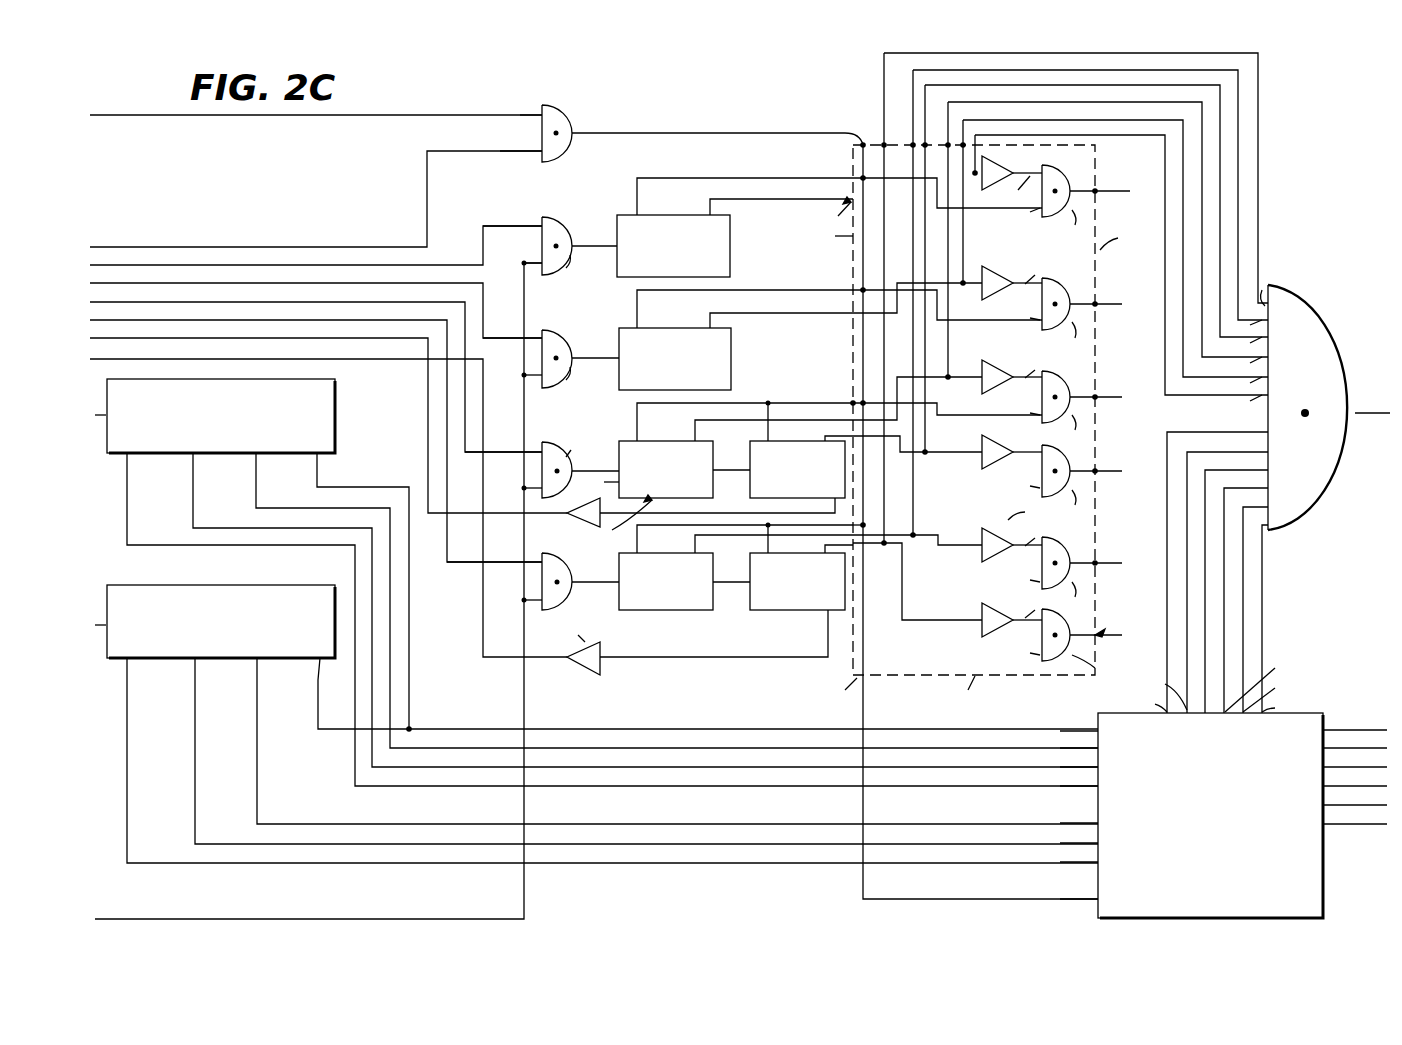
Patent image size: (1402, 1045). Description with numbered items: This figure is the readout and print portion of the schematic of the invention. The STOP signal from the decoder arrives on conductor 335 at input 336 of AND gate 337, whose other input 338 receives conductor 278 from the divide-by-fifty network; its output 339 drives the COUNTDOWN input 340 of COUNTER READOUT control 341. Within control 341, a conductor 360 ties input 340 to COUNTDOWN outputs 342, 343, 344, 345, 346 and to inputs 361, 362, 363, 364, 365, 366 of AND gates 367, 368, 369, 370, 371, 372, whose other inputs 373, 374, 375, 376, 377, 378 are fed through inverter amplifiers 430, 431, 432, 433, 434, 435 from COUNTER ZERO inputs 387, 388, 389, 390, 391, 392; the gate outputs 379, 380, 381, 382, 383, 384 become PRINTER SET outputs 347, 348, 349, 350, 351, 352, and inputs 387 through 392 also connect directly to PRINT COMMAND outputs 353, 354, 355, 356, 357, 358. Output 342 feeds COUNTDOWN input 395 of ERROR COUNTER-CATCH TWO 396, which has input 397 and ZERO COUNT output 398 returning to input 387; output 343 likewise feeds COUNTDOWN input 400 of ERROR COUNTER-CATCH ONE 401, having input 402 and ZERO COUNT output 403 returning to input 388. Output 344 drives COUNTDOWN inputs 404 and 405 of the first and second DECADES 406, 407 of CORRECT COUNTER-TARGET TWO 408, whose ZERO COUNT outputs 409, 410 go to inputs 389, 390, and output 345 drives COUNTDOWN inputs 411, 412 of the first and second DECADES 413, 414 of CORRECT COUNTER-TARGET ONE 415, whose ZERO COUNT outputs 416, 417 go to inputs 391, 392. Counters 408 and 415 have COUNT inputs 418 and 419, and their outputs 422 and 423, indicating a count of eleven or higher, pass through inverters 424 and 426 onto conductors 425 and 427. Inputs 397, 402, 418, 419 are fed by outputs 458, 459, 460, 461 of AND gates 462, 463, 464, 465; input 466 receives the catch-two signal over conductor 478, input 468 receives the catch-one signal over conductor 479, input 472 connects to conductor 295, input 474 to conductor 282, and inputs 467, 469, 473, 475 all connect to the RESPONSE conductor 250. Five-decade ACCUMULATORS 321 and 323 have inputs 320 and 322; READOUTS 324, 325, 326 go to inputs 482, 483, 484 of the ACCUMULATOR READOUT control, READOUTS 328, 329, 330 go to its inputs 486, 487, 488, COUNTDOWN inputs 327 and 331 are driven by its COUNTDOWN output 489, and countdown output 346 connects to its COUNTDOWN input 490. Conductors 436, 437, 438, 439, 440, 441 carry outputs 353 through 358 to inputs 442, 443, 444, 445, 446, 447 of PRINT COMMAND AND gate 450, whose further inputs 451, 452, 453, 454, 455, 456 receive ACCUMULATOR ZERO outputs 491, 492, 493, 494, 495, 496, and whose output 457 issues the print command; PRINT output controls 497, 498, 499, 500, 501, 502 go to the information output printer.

The RESPONSE conductor 250 is at (108, 917).
The conductor 278 is at (108, 117).
The conductor 282 is at (108, 318).
The conductor 295 is at (108, 300).
The input 320 is at (95, 415).
The ACCUMULATOR 321 is at (337, 405).
The input 322 is at (95, 625).
The ACCUMULATOR 323 is at (212, 586).
The readout 324 is at (130, 455).
The readout 325 is at (196, 455).
The readout 326 is at (259, 455).
The COUNTDOWN input 327 is at (320, 455).
The readout 328 is at (130, 660).
The readout 329 is at (198, 660).
The readout 330 is at (260, 660).
The COUNTDOWN input 331 is at (316, 682).
The conductor 335 is at (108, 245).
The input 336 is at (525, 143).
The AND gate 337 is at (563, 110).
The input 338 is at (520, 110).
The output 339 is at (570, 148).
The COUNTDOWN input 340 is at (853, 150).
The COUNTER READOUT control 341 is at (1053, 464).
The countdown output 342 is at (850, 180).
The countdown output 343 is at (852, 292).
The countdown output 344 is at (853, 400).
The countdown output 345 is at (865, 524).
The countdown output 346 is at (832, 691).
The printer set output 347 is at (1098, 190).
The printer set output 348 is at (1098, 303).
The printer set output 349 is at (1098, 396).
The printer set output 350 is at (1098, 470).
The printer set output 351 is at (1098, 562).
The printer set output 352 is at (1098, 634).
The PRINT COMMAND output 353 is at (965, 143).
The PRINT COMMAND output 354 is at (948, 143).
The PRINT COMMAND output 355 is at (925, 143).
The PRINT COMMAND output 356 is at (912, 143).
The PRINT COMMAND output 357 is at (884, 143).
The PRINT COMMAND output 358 is at (858, 142).
The conductor 360 is at (821, 236).
The input 361 is at (1017, 218).
The input 362 is at (1019, 307).
The input 363 is at (1017, 402).
The input 364 is at (1019, 476).
The input 365 is at (1019, 567).
The input 366 is at (1017, 643).
The AND gate 367 is at (1068, 160).
The AND gate 368 is at (1068, 272).
The AND gate 369 is at (1068, 365).
The AND gate 370 is at (1026, 512).
The AND gate 371 is at (1068, 533).
The AND gate 372 is at (1050, 662).
The input 373 is at (1021, 187).
The input 374 is at (1018, 269).
The input 375 is at (1021, 363).
The input 376 is at (1035, 445).
The input 377 is at (1021, 531).
The input 378 is at (1021, 603).
The output 379 is at (1068, 218).
The output 380 is at (1076, 333).
The output 381 is at (1076, 425).
The output 382 is at (1076, 500).
The output 383 is at (1076, 593).
The output 384 is at (1107, 661).
The COUNTER ZERO input 387 is at (818, 210).
The COUNTER ZERO input 388 is at (851, 309).
The COUNTER ZERO input 389 is at (853, 420).
The COUNTER ZERO input 390 is at (853, 436).
The COUNTER ZERO input 391 is at (860, 538).
The COUNTER ZERO input 392 is at (855, 545).
The COUNTDOWN input 395 is at (636, 182).
The ERROR COUNTER-CATCH TWO 396 is at (614, 280).
The input 397 is at (610, 250).
The ZERO COUNT output 398 is at (710, 210).
The COUNTDOWN input 400 is at (652, 305).
The ERROR COUNTER-CATCH ONE 401 is at (731, 357).
The input 402 is at (608, 345).
The ZERO COUNT output 403 is at (712, 325).
The COUNTDOWN input 404 is at (625, 415).
The COUNTDOWN input 405 is at (760, 437).
The first DECADE 406 is at (595, 481).
The second DECADE 407 is at (732, 477).
The CORRECT COUNTER-TARGET TWO 408 is at (627, 516).
The ZERO COUNT output 409 is at (685, 427).
The ZERO COUNT output 410 is at (820, 438).
The COUNTDOWN input 411 is at (630, 535).
The COUNTDOWN input 412 is at (764, 550).
The first DECADE 413 is at (640, 612).
The second DECADE 414 is at (765, 612).
The CORRECT COUNTER-TARGET ONE 415 is at (697, 626).
The ZERO COUNT output 416 is at (685, 545).
The ZERO COUNT output 417 is at (823, 550).
The COUNT input 418 is at (607, 468).
The COUNT input 419 is at (607, 580).
The output 422 is at (717, 500).
The output 423 is at (825, 612).
The inverter 424 is at (566, 522).
The conductor 425 is at (108, 336).
The inverter 426 is at (585, 678).
The conductor 427 is at (108, 357).
The inverter amplifier 430 is at (1008, 150).
The inverter amplifier 431 is at (990, 266).
The inverter amplifier 432 is at (982, 363).
The inverter amplifier 433 is at (982, 440).
The inverter amplifier 434 is at (982, 558).
The inverter amplifier 435 is at (982, 633).
The conductor 436 is at (1115, 137).
The conductor 437 is at (1095, 118).
The conductor 438 is at (1108, 104).
The conductor 439 is at (1108, 87).
The conductor 440 is at (1108, 72).
The conductor 441 is at (1108, 55).
The input 442 is at (1240, 403).
The input 443 is at (1240, 384).
The input 444 is at (1240, 364).
The input 445 is at (1241, 344).
The input 446 is at (1242, 326).
The input 447 is at (1280, 281).
The PRINT COMMAND AND gate 450 is at (1322, 325).
The input 451 is at (1262, 432).
The input 452 is at (1262, 452).
The input 453 is at (1262, 470).
The input 454 is at (1262, 488).
The input 455 is at (1262, 507).
The input 456 is at (1262, 530).
The output 457 is at (1356, 420).
The output 458 is at (566, 275).
The output 459 is at (583, 383).
The output 460 is at (586, 445).
The output 461 is at (568, 598).
The AND gate 462 is at (558, 218).
The AND gate 463 is at (568, 322).
The AND gate 464 is at (560, 443).
The AND gate 465 is at (564, 641).
The input 466 is at (530, 218).
The input 467 is at (538, 250).
The input 468 is at (530, 338).
The input 469 is at (534, 380).
The input 472 is at (535, 452).
The input 473 is at (520, 488).
The input 474 is at (535, 562).
The input 475 is at (538, 610).
The conductor 478 is at (108, 263).
The conductor 479 is at (108, 281).
The input 482 is at (1095, 786).
The input 483 is at (1095, 767).
The input 484 is at (1095, 748).
The input 486 is at (1095, 861).
The input 487 is at (1095, 842).
The input 488 is at (1095, 822).
The COUNTDOWN output 489 is at (1095, 730).
The COUNTDOWN input 490 is at (1095, 898).
The ACCUMULATOR ZERO output 491 is at (1143, 703).
The ACCUMULATOR ZERO output 492 is at (1158, 690).
The ACCUMULATOR ZERO output 493 is at (1212, 714).
The ACCUMULATOR ZERO output 494 is at (1270, 680).
The ACCUMULATOR ZERO output 495 is at (1279, 691).
The ACCUMULATOR ZERO output 496 is at (1289, 701).
The PRINT output control 497 is at (1328, 728).
The PRINT output control 498 is at (1328, 746).
The PRINT output control 499 is at (1328, 765).
The PRINT output control 500 is at (1328, 784).
The PRINT output control 501 is at (1328, 803).
The PRINT output control 502 is at (1328, 822).